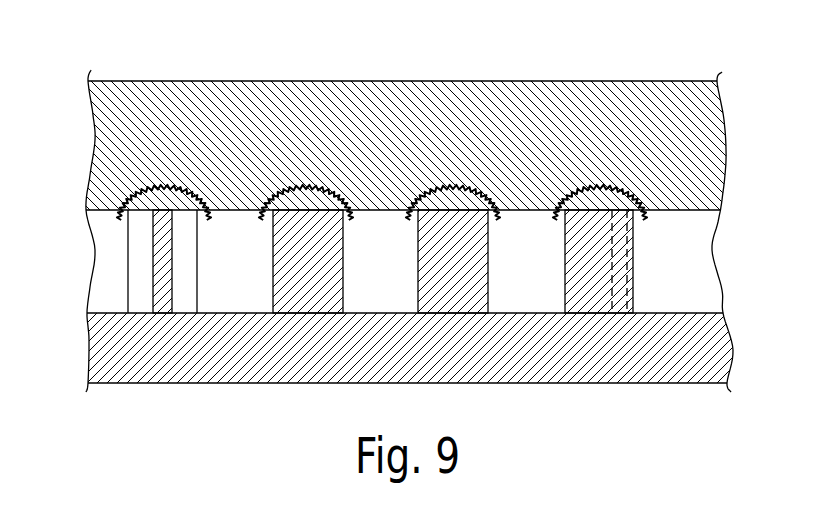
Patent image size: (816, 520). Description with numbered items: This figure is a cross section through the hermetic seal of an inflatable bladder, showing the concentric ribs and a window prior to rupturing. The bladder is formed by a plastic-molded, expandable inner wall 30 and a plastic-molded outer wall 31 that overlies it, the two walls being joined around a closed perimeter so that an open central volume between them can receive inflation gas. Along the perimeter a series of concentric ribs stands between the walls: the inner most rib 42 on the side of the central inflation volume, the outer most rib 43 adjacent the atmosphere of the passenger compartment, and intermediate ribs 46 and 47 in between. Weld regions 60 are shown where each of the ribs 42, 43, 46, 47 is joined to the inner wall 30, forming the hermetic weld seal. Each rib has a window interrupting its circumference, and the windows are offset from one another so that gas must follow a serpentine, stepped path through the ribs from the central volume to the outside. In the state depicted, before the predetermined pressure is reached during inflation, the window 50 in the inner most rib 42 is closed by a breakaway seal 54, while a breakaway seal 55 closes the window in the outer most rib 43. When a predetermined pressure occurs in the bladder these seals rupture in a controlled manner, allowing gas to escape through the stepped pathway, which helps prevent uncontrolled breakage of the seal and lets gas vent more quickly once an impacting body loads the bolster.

The inner wall 30 is at (538, 103).
The outer wall 31 is at (652, 372).
The inner most rib 42 is at (127, 234).
The outer most rib 43 is at (634, 240).
The intermediate rib 46 is at (333, 265).
The intermediate rib 47 is at (477, 248).
The window 50 is at (140, 291).
The breakaway seal 54 is at (158, 262).
The breakaway seal 55 is at (620, 270).
The weld regions 60 is at (157, 196).